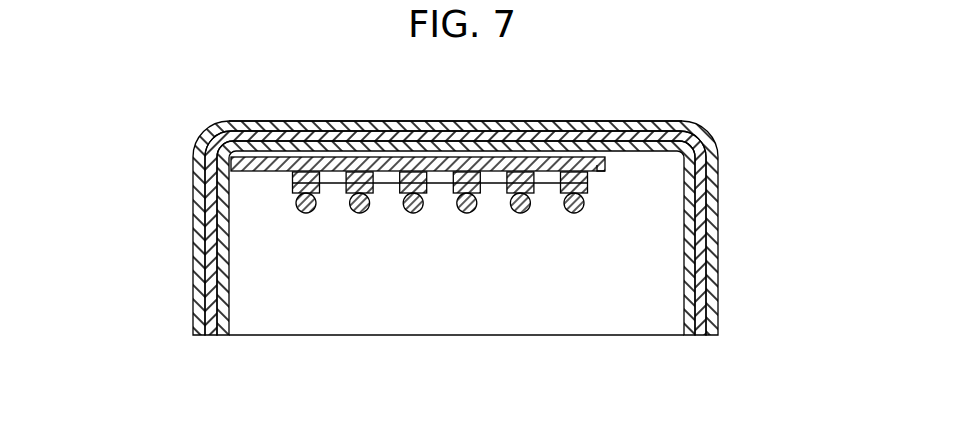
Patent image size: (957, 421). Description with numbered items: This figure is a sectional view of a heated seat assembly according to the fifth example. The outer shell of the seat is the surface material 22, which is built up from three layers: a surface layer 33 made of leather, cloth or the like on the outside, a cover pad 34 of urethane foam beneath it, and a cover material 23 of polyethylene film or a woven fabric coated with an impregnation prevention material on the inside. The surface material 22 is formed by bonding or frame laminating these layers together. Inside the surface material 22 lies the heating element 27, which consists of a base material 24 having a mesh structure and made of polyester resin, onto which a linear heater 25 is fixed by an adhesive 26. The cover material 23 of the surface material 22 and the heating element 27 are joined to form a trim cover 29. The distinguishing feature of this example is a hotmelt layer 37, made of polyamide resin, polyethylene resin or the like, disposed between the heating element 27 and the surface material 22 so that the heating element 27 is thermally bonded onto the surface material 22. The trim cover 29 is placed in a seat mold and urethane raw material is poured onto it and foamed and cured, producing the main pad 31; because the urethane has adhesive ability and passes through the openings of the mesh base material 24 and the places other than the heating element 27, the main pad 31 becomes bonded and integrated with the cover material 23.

The surface material 22 is at (516, 255).
The cover material 23 is at (782, 287).
The base material 24 is at (295, 170).
The linear heater 25 is at (295, 202).
The adhesive 26 is at (295, 190).
The heating element 27 is at (337, 159).
The trim cover 29 is at (566, 124).
The main pad 31 is at (545, 312).
The surface layer 33 is at (715, 285).
The cover pad 34 is at (703, 305).
The hotmelt layer 37 is at (600, 171).